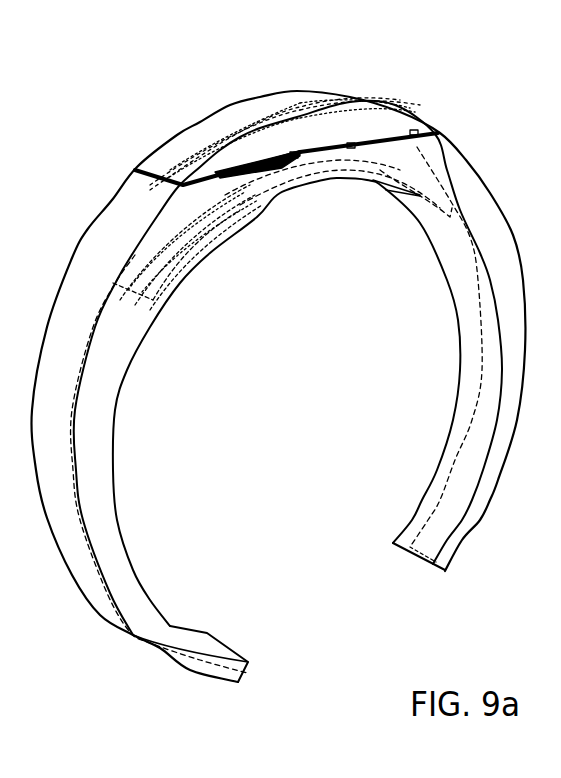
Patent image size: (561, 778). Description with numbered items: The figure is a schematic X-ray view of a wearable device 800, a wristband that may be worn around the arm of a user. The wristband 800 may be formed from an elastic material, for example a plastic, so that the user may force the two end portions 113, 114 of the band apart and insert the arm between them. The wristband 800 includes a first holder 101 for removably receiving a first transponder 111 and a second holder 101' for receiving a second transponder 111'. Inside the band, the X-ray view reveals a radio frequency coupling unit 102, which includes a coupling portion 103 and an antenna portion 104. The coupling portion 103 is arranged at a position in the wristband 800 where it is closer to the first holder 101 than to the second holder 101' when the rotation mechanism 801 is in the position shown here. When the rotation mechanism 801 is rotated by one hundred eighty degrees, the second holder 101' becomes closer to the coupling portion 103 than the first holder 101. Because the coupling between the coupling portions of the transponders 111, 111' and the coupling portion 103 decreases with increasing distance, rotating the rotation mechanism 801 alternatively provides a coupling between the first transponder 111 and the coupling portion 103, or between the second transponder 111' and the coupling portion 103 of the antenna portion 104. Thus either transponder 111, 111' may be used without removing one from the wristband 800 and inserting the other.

The wearable device 800 is at (89, 230).
The rotation mechanism 801 is at (272, 84).
The first holder 101 is at (209, 130).
The second holder 101' is at (360, 76).
The first transponder 111 is at (217, 114).
The second transponder 111' is at (385, 108).
The radio frequency coupling unit 102 is at (203, 257).
The coupling portion 103 is at (270, 178).
The antenna portion 104 is at (223, 213).
The portion of the wristband 113 is at (127, 631).
The portion of the wristband 114 is at (423, 483).